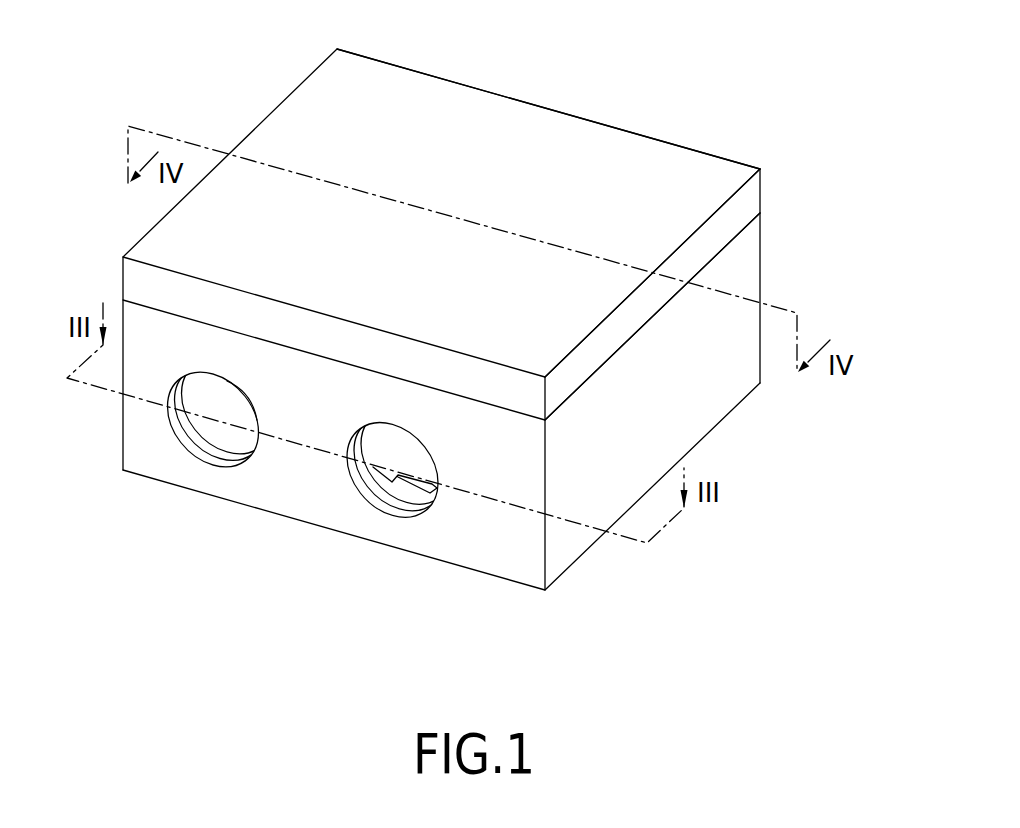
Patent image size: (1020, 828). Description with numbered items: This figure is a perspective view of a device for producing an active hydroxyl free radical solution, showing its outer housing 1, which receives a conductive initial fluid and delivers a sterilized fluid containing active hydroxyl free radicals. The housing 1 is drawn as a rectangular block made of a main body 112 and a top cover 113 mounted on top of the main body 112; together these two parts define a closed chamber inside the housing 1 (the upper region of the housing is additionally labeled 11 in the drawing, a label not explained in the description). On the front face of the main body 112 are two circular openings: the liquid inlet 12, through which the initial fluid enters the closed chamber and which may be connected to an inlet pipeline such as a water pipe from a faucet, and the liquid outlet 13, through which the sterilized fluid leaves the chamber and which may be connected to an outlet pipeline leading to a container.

The housing 1 is at (483, 308).
The housing cover 11 is at (483, 234).
The main body 112 is at (750, 202).
The top cover 113 is at (752, 275).
The liquid inlet 12 is at (393, 508).
The liquid outlet 13 is at (217, 455).